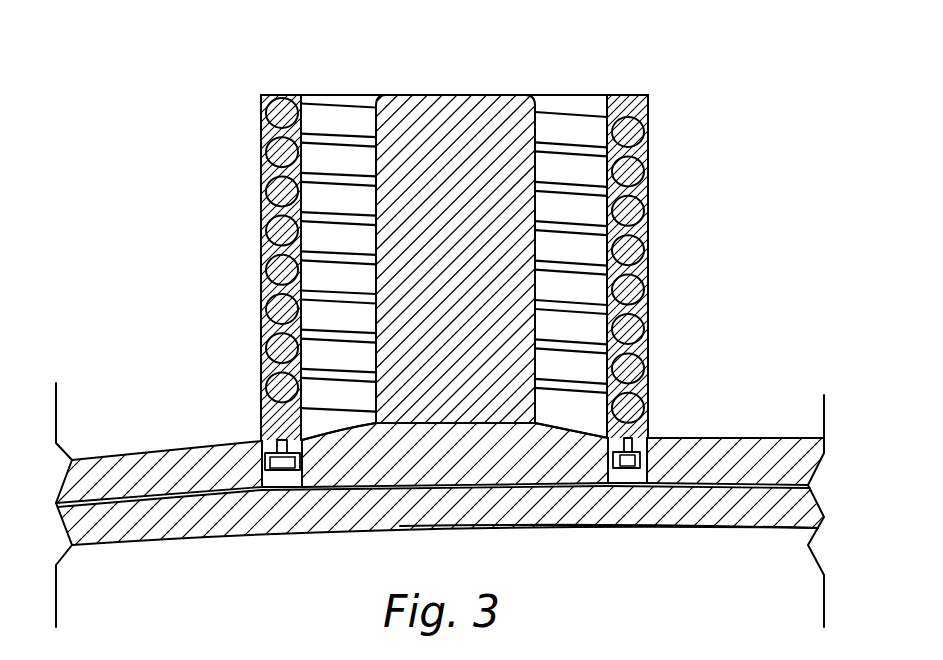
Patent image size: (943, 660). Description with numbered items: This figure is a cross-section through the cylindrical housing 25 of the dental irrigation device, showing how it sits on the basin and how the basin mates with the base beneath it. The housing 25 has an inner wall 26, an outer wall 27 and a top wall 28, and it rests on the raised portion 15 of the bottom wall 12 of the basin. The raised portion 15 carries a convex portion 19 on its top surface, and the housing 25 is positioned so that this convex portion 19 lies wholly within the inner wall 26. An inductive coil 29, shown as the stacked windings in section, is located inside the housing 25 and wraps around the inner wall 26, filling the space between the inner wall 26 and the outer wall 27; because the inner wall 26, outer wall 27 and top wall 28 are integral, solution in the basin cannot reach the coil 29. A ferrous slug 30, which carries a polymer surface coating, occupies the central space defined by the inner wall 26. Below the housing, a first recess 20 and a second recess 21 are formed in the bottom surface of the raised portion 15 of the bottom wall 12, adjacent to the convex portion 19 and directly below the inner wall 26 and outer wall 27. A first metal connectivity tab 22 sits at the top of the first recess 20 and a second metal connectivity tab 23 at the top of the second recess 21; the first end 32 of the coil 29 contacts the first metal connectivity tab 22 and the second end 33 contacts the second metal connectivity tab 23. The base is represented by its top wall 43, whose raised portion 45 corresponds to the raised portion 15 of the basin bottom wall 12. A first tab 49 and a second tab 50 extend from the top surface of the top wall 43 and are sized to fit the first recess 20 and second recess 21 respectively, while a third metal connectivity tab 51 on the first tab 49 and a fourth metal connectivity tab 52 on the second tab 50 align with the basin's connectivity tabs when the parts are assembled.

The bottom wall 12 is at (770, 437).
The raised portion 15 is at (707, 437).
The convex portion 19 is at (456, 422).
The first recess 20 is at (253, 468).
The second recess 21 is at (650, 460).
The first metal connectivity tab 22 is at (268, 452).
The second metal connectivity tab 23 is at (622, 450).
The cylindrical housing 25 is at (262, 236).
The inner wall 26 is at (580, 104).
The outer wall 27 is at (648, 190).
The top wall 28 is at (627, 95).
The inductive coil 29 is at (580, 248).
The ferrous slug 30 is at (442, 95).
The first end 32 is at (279, 442).
The second end 33 is at (600, 446).
The top wall 43 is at (770, 528).
The raised portion 45 is at (685, 528).
The first tab 49 is at (283, 466).
The second tab 50 is at (648, 484).
The third metal connectivity tab 51 is at (285, 468).
The fourth metal connectivity tab 52 is at (635, 466).